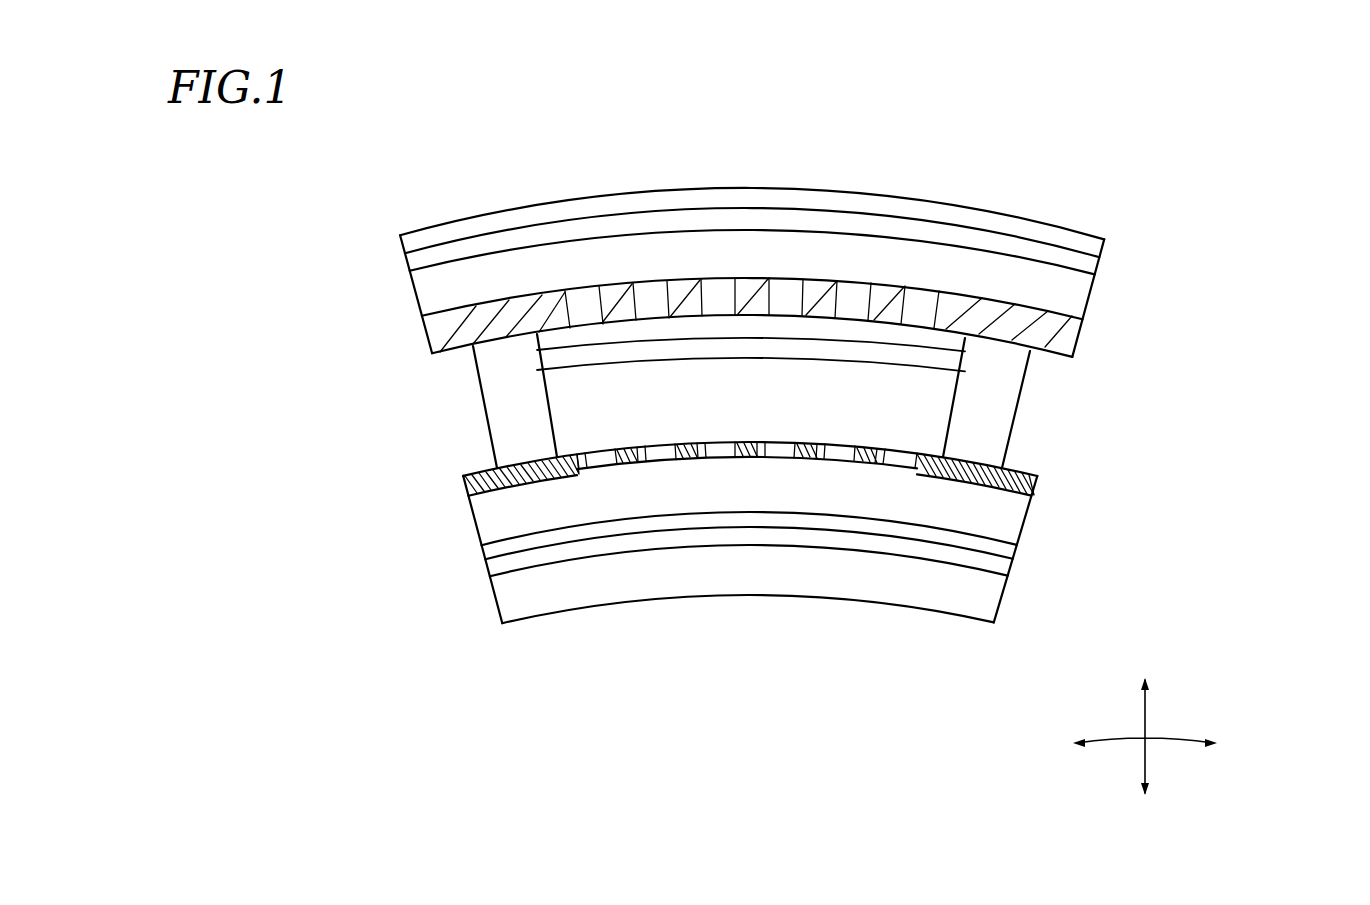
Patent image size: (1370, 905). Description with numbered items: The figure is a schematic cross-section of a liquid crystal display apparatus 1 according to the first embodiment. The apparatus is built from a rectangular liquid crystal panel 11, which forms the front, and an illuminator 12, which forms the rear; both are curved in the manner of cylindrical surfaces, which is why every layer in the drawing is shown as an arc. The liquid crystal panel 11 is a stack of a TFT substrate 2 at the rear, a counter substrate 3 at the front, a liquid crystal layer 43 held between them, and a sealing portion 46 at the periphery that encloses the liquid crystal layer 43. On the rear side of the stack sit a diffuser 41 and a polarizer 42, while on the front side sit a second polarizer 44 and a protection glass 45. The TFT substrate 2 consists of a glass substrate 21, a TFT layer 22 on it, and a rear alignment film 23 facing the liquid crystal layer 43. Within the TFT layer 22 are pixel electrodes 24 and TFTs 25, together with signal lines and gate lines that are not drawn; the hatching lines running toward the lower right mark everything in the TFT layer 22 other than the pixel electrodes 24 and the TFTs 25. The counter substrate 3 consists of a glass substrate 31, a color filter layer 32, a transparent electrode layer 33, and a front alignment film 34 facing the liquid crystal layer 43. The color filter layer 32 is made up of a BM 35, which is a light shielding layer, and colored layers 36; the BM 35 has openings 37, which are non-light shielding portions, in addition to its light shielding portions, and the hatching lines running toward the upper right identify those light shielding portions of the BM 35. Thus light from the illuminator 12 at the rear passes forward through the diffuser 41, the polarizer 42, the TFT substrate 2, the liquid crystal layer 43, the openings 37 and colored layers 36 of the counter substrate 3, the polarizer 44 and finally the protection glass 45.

The liquid crystal display apparatus 1 is at (1056, 141).
The liquid crystal panel 11 is at (400, 224).
The illuminator 12 is at (993, 607).
The TFT substrate 2 is at (380, 428).
The glass substrate 21 is at (484, 512).
The TFT layer 22 is at (450, 486).
The alignment film 23 is at (577, 440).
The pixel electrodes 24 is at (727, 445).
The TFTs 25 is at (762, 448).
The counter substrate 3 is at (332, 262).
The glass substrate 31 is at (430, 292).
The color filter layer 32 is at (408, 338).
The transparent electrode layer 33 is at (540, 343).
The alignment film 34 is at (545, 369).
The BM 35 is at (516, 312).
The colored layers 36 is at (702, 285).
The openings 37 is at (635, 286).
The diffuser 41 is at (1000, 571).
The polarizer 42 is at (1008, 552).
The liquid crystal layer 43 is at (940, 398).
The polarizer 44 is at (1087, 267).
The protection glass 45 is at (1093, 249).
The sealing portion 46 is at (1003, 372).